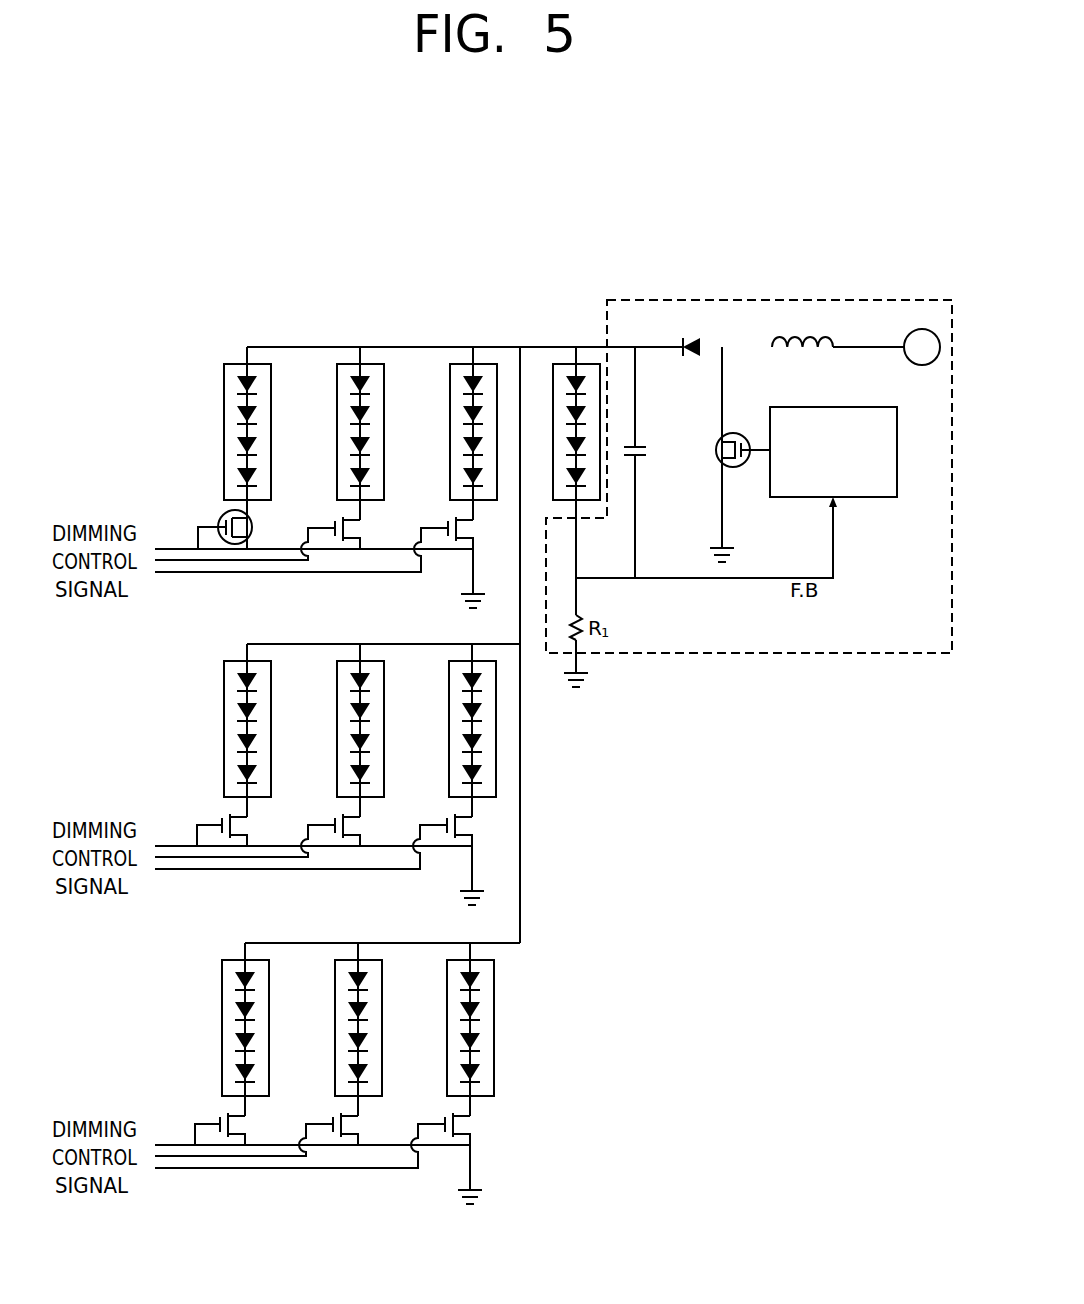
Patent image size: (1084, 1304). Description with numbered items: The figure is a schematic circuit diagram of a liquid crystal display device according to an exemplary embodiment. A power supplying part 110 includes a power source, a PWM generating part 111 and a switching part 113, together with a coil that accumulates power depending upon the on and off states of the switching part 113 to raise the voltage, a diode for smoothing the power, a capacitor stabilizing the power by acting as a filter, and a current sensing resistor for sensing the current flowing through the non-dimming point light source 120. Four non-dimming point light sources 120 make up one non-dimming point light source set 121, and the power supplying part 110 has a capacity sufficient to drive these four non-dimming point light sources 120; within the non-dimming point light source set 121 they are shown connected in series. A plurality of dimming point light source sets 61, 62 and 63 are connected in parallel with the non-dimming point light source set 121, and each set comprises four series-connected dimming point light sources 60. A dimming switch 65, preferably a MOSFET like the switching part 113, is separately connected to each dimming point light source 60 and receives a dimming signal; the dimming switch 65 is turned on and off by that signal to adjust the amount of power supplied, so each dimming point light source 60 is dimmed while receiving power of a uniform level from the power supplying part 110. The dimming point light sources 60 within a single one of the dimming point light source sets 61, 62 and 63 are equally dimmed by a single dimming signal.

The dimming point light source 60 is at (250, 372).
The dimming point light source set 61 is at (238, 363).
The dimming point light source set 62 is at (348, 363).
The dimming point light source set 63 is at (460, 363).
The dimming switch 65 is at (220, 520).
The power supplying part 110 is at (749, 439).
The PWM generating part 111 is at (880, 498).
The switching part 113 is at (745, 467).
The non-dimming point light source 120 is at (582, 372).
The non-dimming point light source set 121 is at (558, 363).